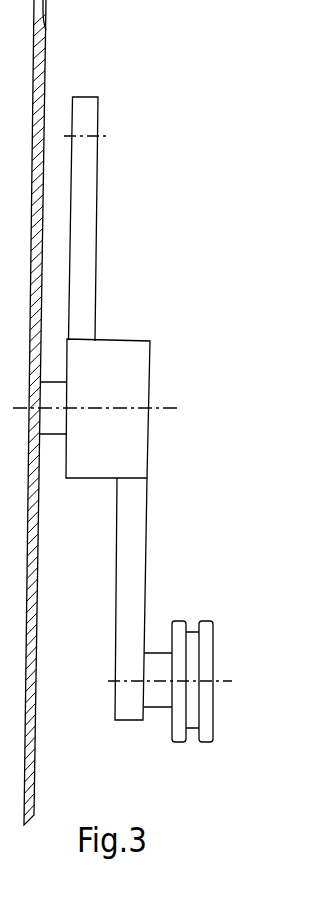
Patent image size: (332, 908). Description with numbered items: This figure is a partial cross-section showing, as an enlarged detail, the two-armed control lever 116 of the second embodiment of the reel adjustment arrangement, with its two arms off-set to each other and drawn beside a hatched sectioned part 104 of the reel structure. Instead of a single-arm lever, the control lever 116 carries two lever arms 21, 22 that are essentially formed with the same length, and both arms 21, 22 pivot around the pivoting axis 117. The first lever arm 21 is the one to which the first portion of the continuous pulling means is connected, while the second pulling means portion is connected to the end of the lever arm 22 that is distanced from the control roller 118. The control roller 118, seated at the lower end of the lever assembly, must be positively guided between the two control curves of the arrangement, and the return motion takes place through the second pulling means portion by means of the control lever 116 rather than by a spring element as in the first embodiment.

The side wall 104 is at (47, 50).
The lever arm 22 is at (90, 127).
The control lever 116 is at (138, 362).
The pivoting axis 117 is at (112, 410).
The lever arm 21 is at (137, 541).
The control roller 118 is at (207, 649).